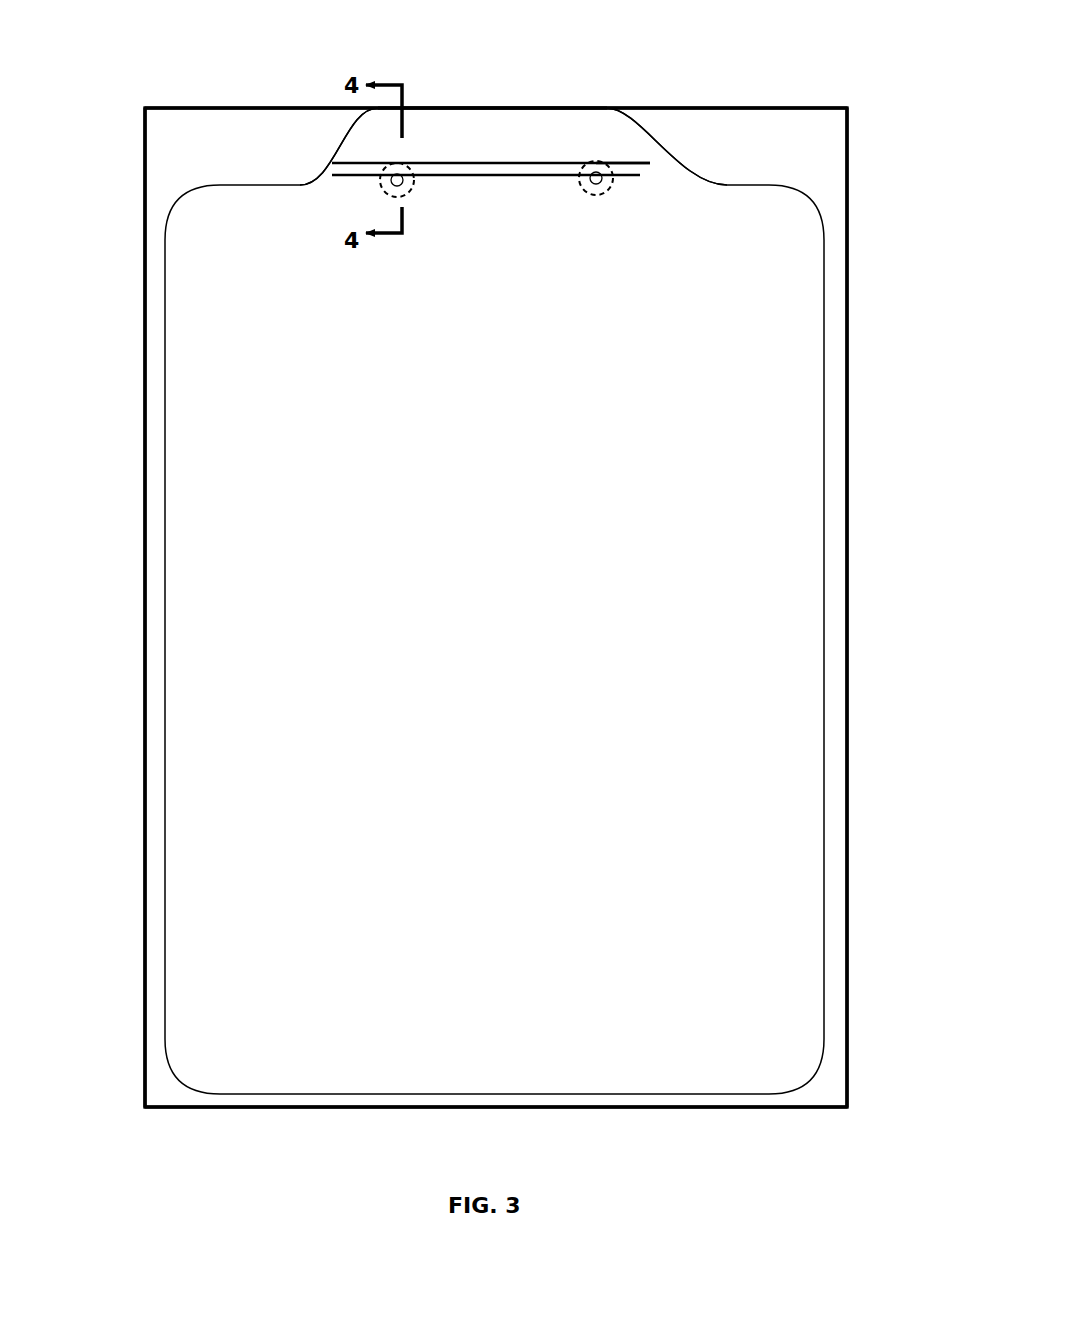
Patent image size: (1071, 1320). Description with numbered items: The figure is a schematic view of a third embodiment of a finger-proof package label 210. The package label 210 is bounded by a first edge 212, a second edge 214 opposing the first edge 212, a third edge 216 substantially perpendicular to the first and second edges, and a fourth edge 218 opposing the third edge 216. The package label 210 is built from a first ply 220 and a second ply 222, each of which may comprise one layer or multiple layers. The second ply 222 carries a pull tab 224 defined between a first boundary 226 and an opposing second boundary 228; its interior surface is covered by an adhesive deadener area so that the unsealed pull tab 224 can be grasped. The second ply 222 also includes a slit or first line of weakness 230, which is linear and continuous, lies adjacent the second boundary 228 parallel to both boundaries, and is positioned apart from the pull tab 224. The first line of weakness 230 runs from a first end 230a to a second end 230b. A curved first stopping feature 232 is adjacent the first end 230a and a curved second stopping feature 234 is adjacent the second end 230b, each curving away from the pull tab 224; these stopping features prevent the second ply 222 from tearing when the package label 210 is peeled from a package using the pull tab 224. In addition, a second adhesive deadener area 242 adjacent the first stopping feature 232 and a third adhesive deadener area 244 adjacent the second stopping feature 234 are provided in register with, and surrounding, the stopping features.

The package label 210 is at (97, 120).
The first edge 212 is at (410, 108).
The second edge 214 is at (253, 1107).
The third edge 216 is at (147, 655).
The fourth edge 218 is at (847, 452).
The first ply 220 is at (882, 1074).
The second ply 222 is at (494, 601).
The pull tab 224 is at (540, 135).
The first boundary 226 is at (495, 108).
The second boundary 228 is at (637, 170).
The first line of weakness 230 is at (478, 173).
The first end 230a is at (413, 182).
The second end 230b is at (576, 180).
The first stopping feature 232 is at (390, 183).
The second stopping feature 234 is at (592, 180).
The second adhesive deadener area 242 is at (378, 200).
The third adhesive deadener area 244 is at (595, 207).